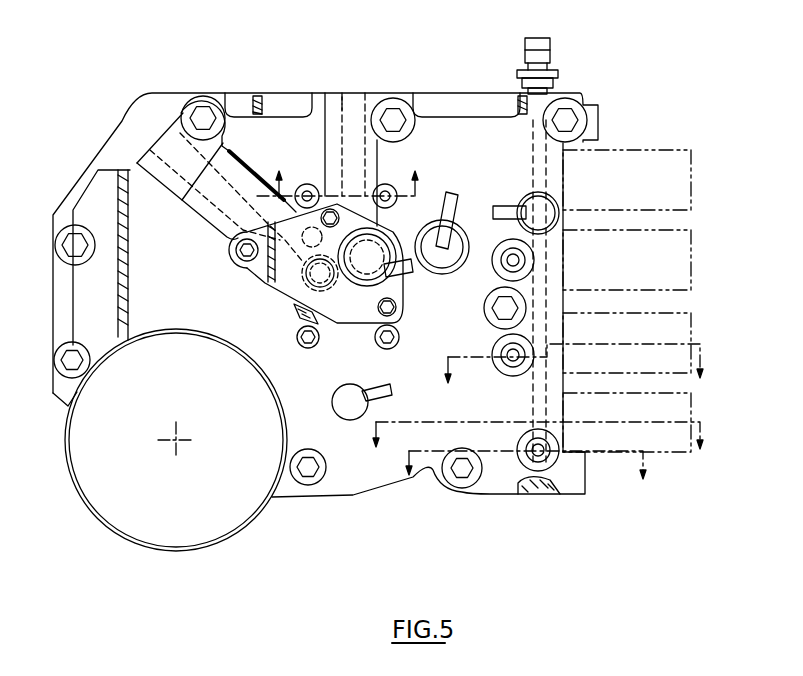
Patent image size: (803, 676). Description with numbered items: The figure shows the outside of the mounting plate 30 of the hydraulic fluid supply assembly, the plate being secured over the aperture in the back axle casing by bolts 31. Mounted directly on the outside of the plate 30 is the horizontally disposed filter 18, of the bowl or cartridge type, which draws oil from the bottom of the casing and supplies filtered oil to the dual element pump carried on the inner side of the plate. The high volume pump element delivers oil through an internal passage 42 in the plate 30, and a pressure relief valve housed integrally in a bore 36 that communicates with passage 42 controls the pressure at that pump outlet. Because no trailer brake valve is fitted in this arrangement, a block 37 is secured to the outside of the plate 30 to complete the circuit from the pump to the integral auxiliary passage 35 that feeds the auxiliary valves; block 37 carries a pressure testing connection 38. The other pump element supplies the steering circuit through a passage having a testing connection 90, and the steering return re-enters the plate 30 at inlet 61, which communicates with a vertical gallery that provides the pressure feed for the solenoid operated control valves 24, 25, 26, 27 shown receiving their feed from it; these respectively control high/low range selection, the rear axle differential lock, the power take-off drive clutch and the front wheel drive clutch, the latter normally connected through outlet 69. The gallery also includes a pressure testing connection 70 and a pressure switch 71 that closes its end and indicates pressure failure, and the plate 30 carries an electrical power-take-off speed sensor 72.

The filter 18 is at (148, 540).
The solenoid operated fluid flow control valve 24 is at (642, 428).
The solenoid operated fluid flow control valve 25 is at (642, 280).
The solenoid operated fluid flow control valve 26 is at (644, 190).
The solenoid operated fluid flow control valve 27 is at (642, 357).
The mounting plate 30 is at (93, 196).
The bolts 31 is at (200, 110).
The integral passage 35 is at (182, 142).
The bore 36 is at (342, 97).
The block 37 is at (278, 281).
The pressure testing connection 38 is at (386, 278).
The internal passage 42 is at (540, 137).
The inlet 61 is at (530, 470).
The outlet 69 is at (516, 368).
The pressure testing connection 70 is at (527, 197).
The pressure switch 71 is at (550, 60).
The electrical power-take-off speed sensor 72 is at (437, 218).
The testing connection 90 is at (351, 416).